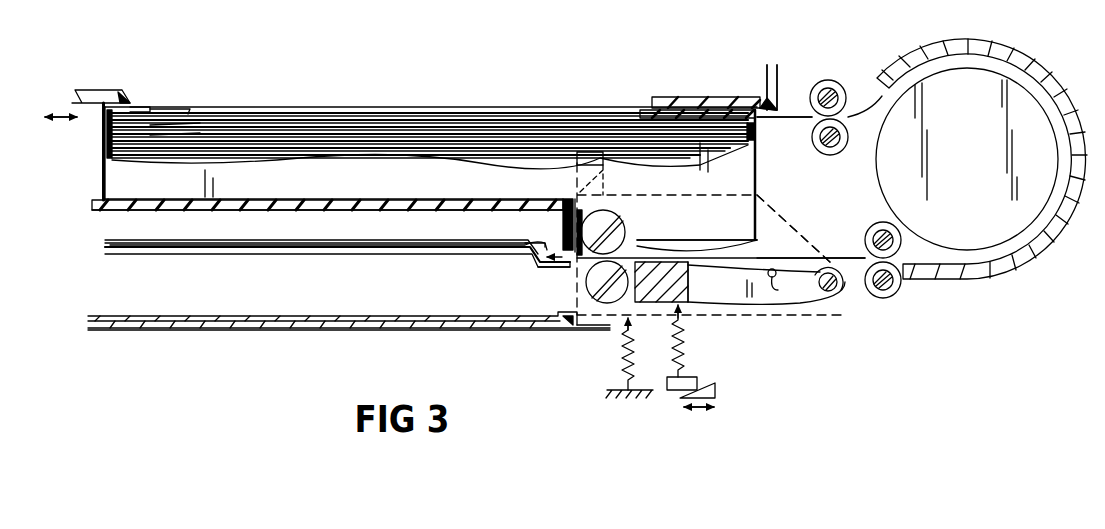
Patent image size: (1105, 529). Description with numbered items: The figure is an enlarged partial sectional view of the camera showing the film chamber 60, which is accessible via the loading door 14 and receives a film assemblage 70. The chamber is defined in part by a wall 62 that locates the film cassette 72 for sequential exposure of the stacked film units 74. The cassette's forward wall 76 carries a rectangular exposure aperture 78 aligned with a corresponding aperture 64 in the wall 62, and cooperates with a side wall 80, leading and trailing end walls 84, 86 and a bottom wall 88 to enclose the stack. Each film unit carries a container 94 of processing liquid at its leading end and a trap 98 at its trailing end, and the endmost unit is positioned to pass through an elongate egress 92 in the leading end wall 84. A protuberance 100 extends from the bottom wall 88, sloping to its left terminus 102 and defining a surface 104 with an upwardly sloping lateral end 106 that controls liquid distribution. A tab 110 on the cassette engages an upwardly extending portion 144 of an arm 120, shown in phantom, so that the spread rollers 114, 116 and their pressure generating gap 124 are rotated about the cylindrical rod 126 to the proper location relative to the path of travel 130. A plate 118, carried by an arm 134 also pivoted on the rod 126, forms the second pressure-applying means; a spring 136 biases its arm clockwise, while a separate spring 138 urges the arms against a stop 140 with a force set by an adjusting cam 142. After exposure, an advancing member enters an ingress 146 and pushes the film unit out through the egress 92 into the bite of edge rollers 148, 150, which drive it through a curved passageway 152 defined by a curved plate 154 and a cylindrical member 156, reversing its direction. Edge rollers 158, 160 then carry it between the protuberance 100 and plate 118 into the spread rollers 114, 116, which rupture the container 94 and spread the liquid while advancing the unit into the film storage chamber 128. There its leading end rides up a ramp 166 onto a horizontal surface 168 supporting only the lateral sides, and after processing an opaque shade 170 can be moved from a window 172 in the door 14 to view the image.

The loading door 14 is at (585, 329).
The film chamber 60 is at (83, 190).
The wall 62 is at (672, 97).
The aperture 64 is at (652, 103).
The film assemblage 70 is at (545, 80).
The film cassette 72 is at (190, 205).
The film units 74 is at (318, 150).
The forward wall 76 is at (150, 105).
The exposure aperture 78 is at (186, 108).
The side wall 80 is at (334, 184).
The leading end wall 84 is at (758, 186).
The trailing end wall 86 is at (102, 168).
The bottom wall 88 is at (345, 207).
The egress 92 is at (790, 110).
The container of processing liquid 94 is at (640, 116).
The trap 98 is at (150, 138).
The protuberance 100 is at (760, 232).
The left terminus 102 is at (626, 224).
The surface 104 is at (813, 257).
The lateral end 106 is at (726, 246).
The tab 110 is at (577, 158).
The spread roller 114 is at (612, 210).
The spread roller 116 is at (586, 285).
The plate 118 is at (700, 302).
The arm 120 is at (800, 203).
The pressure generating gap 124 is at (640, 246).
The cylindrical rod 126 is at (826, 300).
The film storage chamber 128 is at (330, 256).
The path of travel 130 is at (868, 100).
The arm 134 is at (755, 303).
The spring 136 is at (620, 362).
The spring 138 is at (686, 350).
The stop 140 is at (775, 278).
The adjusting cam 142 is at (718, 394).
The upwardly extending portion 144 is at (98, 108).
The ingress 146 is at (690, 279).
The edge roller 148 is at (830, 80).
The edge roller 150 is at (815, 144).
The curved passageway 152 is at (884, 110).
The curved plate 154 is at (1033, 58).
The cylindrical member 156 is at (967, 159).
The edge roller 158 is at (900, 230).
The edge roller 160 is at (897, 294).
The ramp 166 is at (545, 265).
The horizontal surface 168 is at (437, 256).
The opaque shade 170 is at (237, 315).
The window 172 is at (330, 329).